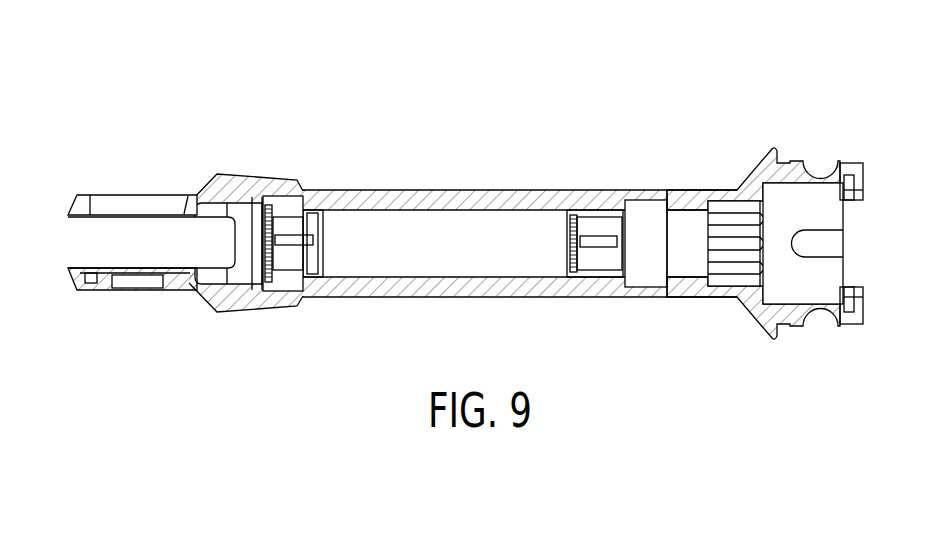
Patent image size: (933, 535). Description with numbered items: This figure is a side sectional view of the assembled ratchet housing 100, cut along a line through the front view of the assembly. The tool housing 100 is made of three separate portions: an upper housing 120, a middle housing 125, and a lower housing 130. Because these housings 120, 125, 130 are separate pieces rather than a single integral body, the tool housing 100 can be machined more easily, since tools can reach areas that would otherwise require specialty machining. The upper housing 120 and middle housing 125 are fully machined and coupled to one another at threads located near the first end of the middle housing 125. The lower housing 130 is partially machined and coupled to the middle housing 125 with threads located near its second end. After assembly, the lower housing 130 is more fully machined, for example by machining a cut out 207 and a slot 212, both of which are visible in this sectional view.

The ratchet housing 100 is at (486, 209).
The upper housing 120 is at (250, 184).
The middle housing 125 is at (395, 297).
The lower housing 130 is at (740, 300).
The cut out 207 is at (818, 304).
The slot 212 is at (813, 240).